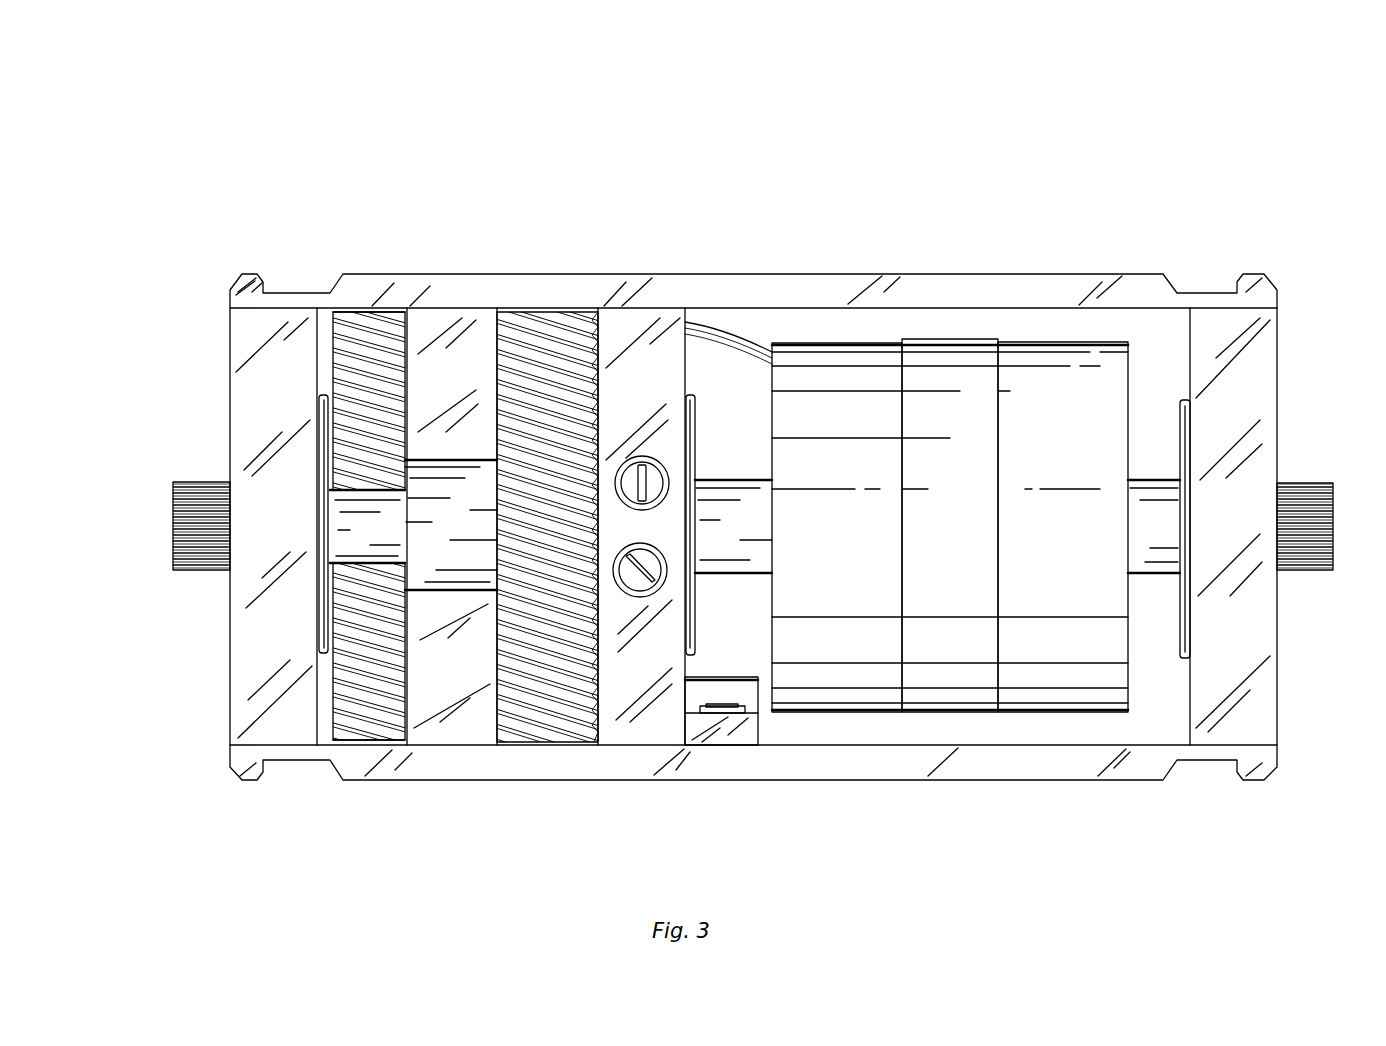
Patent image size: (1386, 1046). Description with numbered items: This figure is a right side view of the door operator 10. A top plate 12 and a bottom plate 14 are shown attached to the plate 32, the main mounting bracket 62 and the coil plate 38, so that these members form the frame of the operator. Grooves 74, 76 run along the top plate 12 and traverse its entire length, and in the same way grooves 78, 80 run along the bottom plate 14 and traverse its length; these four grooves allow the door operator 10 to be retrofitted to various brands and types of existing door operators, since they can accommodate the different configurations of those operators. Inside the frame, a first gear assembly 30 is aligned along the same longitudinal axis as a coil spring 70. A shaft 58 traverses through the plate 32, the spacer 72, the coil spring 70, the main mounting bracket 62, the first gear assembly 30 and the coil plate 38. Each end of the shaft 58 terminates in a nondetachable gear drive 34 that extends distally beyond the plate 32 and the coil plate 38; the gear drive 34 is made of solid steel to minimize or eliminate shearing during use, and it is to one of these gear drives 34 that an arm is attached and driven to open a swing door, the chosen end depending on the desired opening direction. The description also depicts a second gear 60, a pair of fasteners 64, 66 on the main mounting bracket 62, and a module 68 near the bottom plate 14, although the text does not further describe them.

The door operator 10 is at (1163, 158).
The top plate 12 is at (672, 275).
The bottom plate 14 is at (805, 781).
The first gear assembly 30 is at (380, 330).
The plate 32 is at (1244, 440).
The nondetachable gear drive 34 is at (196, 480).
The coil plate 38 is at (276, 406).
The shaft 58 is at (352, 540).
The second gear 60 is at (530, 720).
The main mounting bracket 62 is at (631, 676).
The fastener 64 is at (640, 458).
The fastener 66 is at (657, 552).
The controller module 68 is at (727, 740).
The coil spring 70 is at (922, 549).
The spacer 72 is at (1181, 407).
The groove 74 is at (297, 293).
The groove 76 is at (1210, 293).
The groove 78 is at (303, 763).
The groove 80 is at (1205, 762).